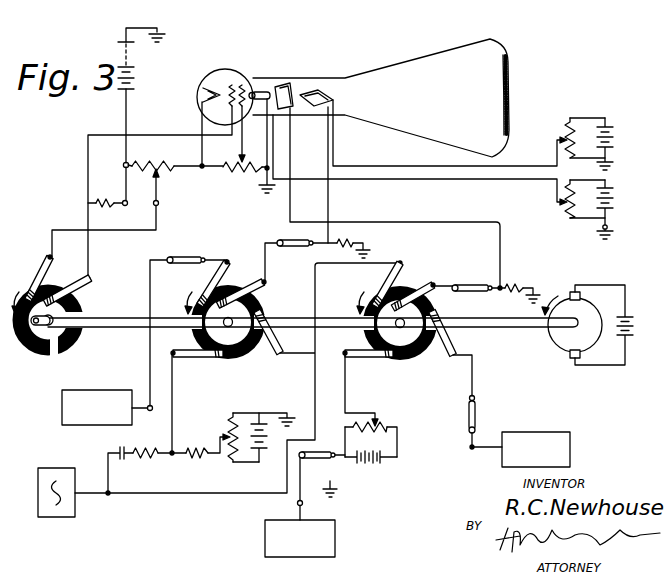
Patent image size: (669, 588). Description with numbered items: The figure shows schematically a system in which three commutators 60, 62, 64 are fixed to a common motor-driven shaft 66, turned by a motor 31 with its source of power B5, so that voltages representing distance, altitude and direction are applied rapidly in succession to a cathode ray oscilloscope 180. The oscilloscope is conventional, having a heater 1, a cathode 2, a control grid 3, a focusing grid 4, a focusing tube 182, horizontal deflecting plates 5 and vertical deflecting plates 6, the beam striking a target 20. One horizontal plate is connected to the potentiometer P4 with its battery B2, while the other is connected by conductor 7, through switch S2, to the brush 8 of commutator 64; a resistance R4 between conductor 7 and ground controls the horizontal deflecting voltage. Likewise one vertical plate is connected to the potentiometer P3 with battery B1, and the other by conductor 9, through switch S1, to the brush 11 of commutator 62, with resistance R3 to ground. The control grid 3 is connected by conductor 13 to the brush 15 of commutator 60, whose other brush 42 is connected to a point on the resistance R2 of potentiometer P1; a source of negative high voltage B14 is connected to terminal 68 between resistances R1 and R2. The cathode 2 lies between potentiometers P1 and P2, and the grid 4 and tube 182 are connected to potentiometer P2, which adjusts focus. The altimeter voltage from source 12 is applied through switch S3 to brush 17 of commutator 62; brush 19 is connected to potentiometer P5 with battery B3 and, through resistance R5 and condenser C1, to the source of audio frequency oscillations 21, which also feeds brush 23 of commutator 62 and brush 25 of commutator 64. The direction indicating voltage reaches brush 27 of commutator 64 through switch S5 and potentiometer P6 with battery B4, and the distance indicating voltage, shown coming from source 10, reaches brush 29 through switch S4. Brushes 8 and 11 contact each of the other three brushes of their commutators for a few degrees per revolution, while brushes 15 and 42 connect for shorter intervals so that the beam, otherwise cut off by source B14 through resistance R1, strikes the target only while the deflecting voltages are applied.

The heater 1 is at (201, 97).
The cathode 2 is at (210, 80).
The control grid 3 is at (231, 85).
The focusing grid 4 is at (243, 85).
The horizontal deflecting plates 5 is at (287, 82).
The vertical deflecting plates 6 is at (320, 88).
The conductor 7 is at (290, 202).
The brush 8 is at (430, 285).
The conductor 9 is at (329, 202).
The distance indicator D.C. voltage source 10 is at (545, 431).
The brush 11 is at (256, 288).
The altimeter voltage source 12 is at (62, 406).
The conductor 13 is at (88, 182).
The brush 15 is at (88, 289).
The brush 17 is at (232, 274).
The brush 19 is at (190, 358).
The target 20 is at (510, 98).
The source of audio frequency oscillations 21 is at (54, 518).
The brush 23 is at (270, 342).
The brush 25 is at (388, 281).
The brush 27 is at (362, 358).
The brush 29 is at (441, 346).
The motor 31 is at (567, 333).
The brush 42 is at (54, 268).
The commutator 60 is at (76, 350).
The commutator 62 is at (226, 360).
The commutator 64 is at (405, 363).
The motor-driven shaft 66 is at (128, 329).
The terminal 68 is at (123, 163).
The cathode ray oscilloscope 180 is at (497, 44).
The focusing tube 182 is at (266, 89).
The battery B1 is at (614, 142).
The battery B2 is at (614, 208).
The battery B3 is at (255, 425).
The battery B4 is at (362, 467).
The source of power B5 is at (634, 327).
The source of negative high voltage B14 is at (113, 52).
The potentiometer P1 is at (105, 213).
The potentiometer P2 is at (249, 180).
The potentiometer P3 is at (563, 137).
The potentiometer P4 is at (562, 204).
The potentiometer P5 is at (228, 421).
The potentiometer P6 is at (381, 425).
The resistance R1 is at (107, 197).
The resistance R2 is at (161, 170).
The resistance R3 is at (355, 243).
The resistance R4 is at (512, 286).
The resistance R5 is at (150, 461).
The switch S1 is at (285, 246).
The switch S2 is at (476, 285).
The switch S3 is at (188, 322).
The switch S4 is at (478, 404).
The switch S5 is at (307, 460).
The condenser C1 is at (123, 461).